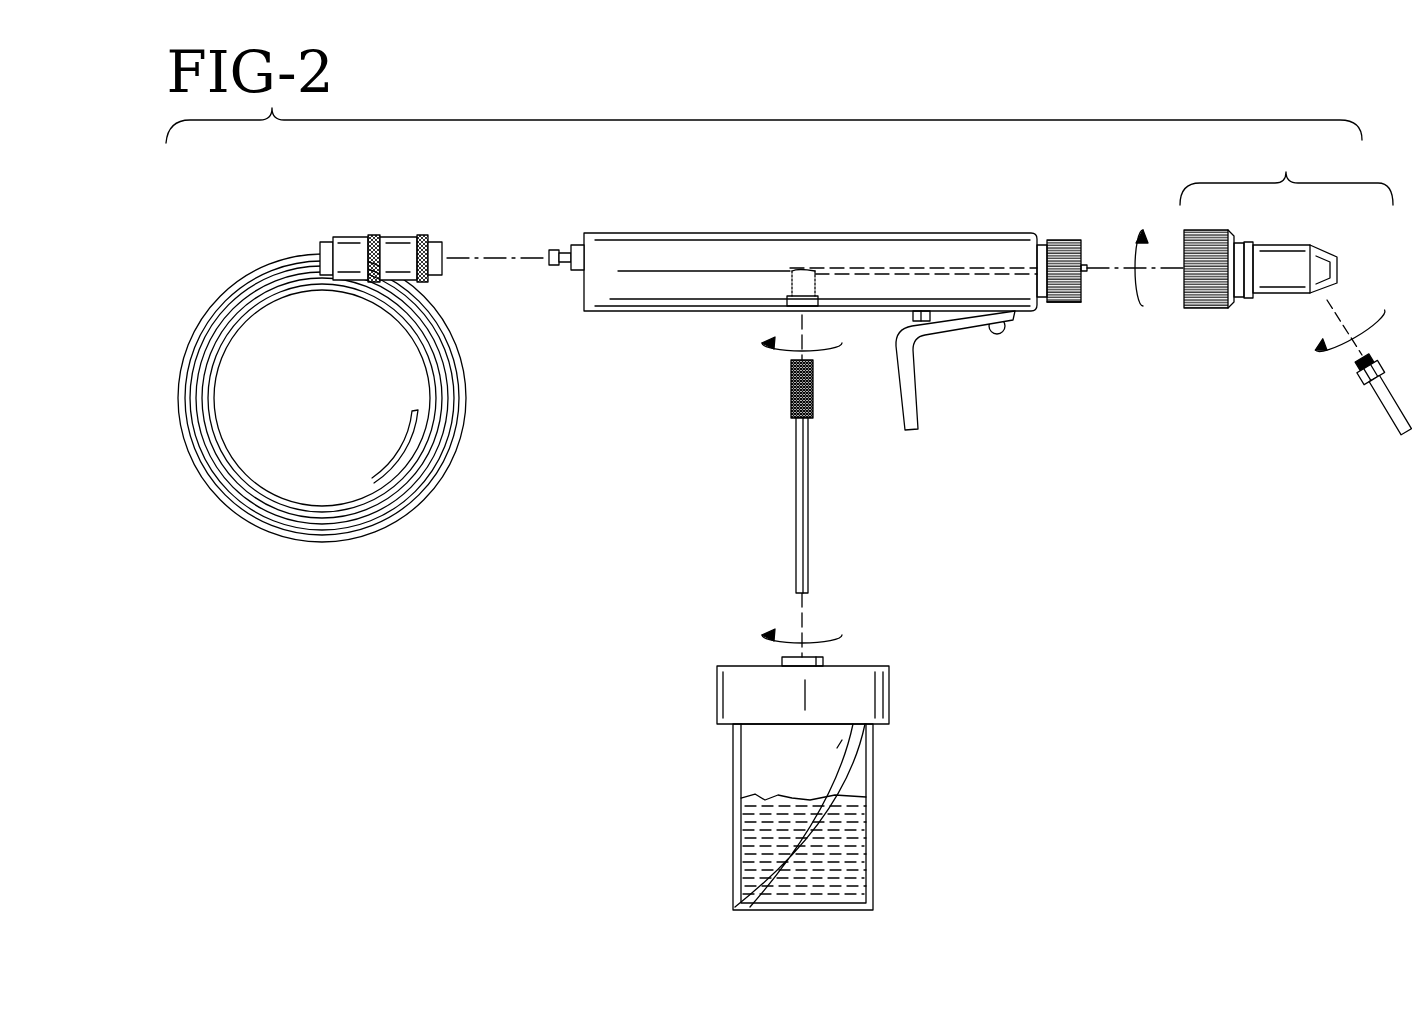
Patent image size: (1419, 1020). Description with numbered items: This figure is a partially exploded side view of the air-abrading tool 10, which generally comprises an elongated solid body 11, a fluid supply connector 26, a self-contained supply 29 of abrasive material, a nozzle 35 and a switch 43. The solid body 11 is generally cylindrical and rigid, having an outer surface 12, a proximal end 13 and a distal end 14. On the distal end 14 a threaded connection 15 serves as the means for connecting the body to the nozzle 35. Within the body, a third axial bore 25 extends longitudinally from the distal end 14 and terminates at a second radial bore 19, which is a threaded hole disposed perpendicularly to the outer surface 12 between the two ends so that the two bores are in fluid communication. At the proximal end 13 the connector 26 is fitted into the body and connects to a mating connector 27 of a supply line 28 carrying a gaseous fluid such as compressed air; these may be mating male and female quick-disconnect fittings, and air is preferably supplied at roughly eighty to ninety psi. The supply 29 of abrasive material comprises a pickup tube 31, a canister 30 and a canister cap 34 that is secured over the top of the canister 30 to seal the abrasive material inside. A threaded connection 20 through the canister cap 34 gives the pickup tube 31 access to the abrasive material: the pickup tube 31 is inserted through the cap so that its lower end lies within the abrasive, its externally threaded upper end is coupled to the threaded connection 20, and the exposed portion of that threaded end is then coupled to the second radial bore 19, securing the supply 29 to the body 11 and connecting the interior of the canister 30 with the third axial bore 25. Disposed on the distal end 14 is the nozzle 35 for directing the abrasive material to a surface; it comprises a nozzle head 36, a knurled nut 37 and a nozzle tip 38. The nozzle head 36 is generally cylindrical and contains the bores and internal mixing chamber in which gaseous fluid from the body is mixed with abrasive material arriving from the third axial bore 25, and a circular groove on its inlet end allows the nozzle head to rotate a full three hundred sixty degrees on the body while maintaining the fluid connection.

The air-abrading tool 10 is at (1065, 518).
The solid body 11 is at (634, 244).
The outer surface 12 is at (845, 233).
The proximal end 13 is at (580, 305).
The distal end 14 is at (1073, 305).
The threaded connection 15 is at (1065, 240).
The second radial bore 19 is at (790, 258).
The threaded connection 20 is at (825, 660).
The third axial bore 25 is at (918, 266).
The connector 26 is at (562, 250).
The mating connector 27 is at (380, 237).
The supply line 28 is at (233, 283).
The supply of abrasive material 29 is at (700, 915).
The canister 30 is at (875, 812).
The pickup tube 31 is at (808, 540).
The canister cap 34 is at (890, 695).
The nozzle 35 is at (1298, 296).
The nozzle head 36 is at (1285, 296).
The knurled nut 37 is at (1205, 308).
The nozzle tip 38 is at (1392, 424).
The switch 43 is at (912, 452).